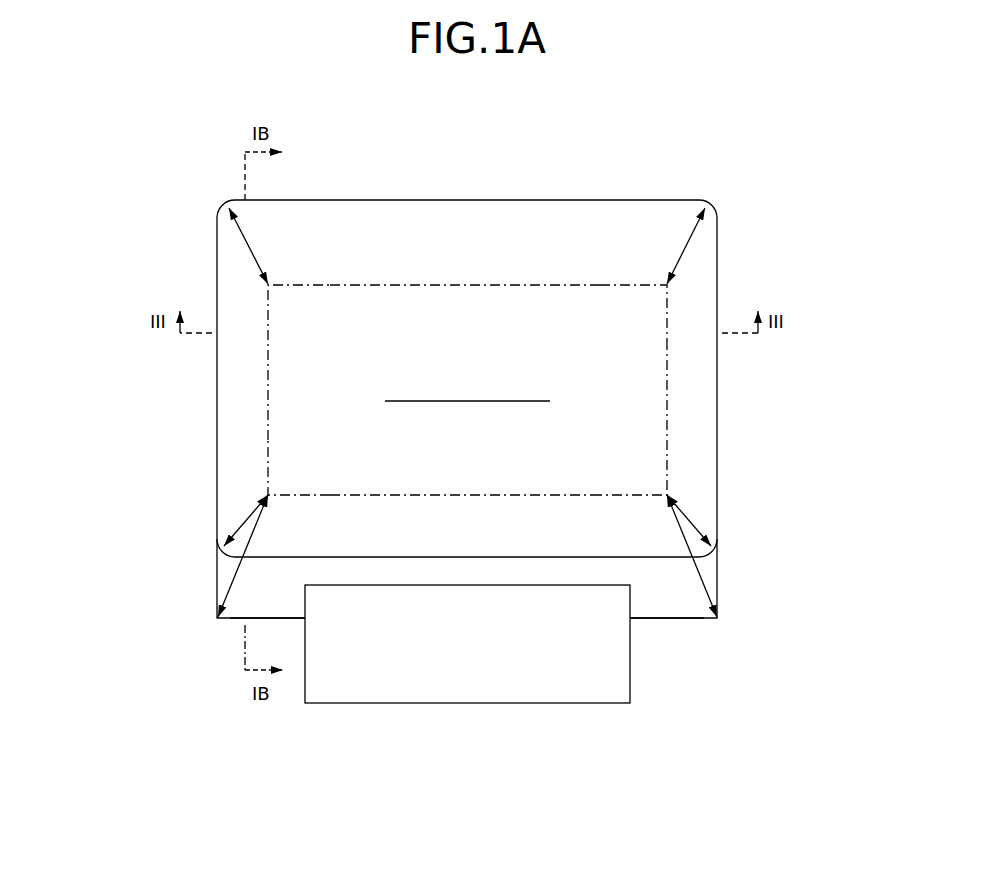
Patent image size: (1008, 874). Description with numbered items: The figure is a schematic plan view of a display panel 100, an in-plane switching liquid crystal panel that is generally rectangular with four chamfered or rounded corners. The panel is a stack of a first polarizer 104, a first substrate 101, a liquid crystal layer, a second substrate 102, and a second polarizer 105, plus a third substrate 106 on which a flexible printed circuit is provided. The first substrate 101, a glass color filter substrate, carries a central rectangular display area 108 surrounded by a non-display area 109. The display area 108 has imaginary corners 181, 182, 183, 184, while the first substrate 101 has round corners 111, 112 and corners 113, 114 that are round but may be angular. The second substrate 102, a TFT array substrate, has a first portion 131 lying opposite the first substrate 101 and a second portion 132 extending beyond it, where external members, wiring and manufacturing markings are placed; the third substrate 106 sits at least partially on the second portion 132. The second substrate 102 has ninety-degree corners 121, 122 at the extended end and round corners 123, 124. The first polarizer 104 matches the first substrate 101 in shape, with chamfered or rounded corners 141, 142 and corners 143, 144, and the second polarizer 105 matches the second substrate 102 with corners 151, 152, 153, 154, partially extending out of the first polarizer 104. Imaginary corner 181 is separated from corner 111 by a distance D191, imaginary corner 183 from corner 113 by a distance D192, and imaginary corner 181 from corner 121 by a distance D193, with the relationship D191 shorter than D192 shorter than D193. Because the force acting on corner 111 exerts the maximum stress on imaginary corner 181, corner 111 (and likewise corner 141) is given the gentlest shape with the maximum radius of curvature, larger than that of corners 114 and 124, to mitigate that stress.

The display panel 100 is at (366, 161).
The first substrate 101 is at (117, 378).
The second substrate 102 is at (440, 680).
The first polarizer 104 is at (117, 378).
The second polarizer 105 is at (237, 624).
The third substrate 106 is at (480, 676).
The display area 108 is at (500, 326).
The non-display area 109 is at (235, 372).
The corner 111 is at (766, 576).
The corner 112 is at (172, 576).
The corner 113 is at (142, 182).
The corner 114 is at (802, 182).
The corner 121 is at (770, 641).
The corner 122 is at (171, 641).
The corner 123 is at (142, 182).
The corner 124 is at (802, 182).
The first portion 131 is at (216, 435).
The second portion 132 is at (657, 604).
The corner 141 is at (717, 565).
The corner 142 is at (218, 565).
The corner 143 is at (142, 182).
The corner 144 is at (802, 182).
The corner 151 is at (717, 620).
The corner 152 is at (218, 620).
The corner 153 is at (227, 204).
The corner 154 is at (757, 172).
The imaginary corner 181 is at (667, 495).
The imaginary corner 182 is at (270, 495).
The imaginary corner 183 is at (270, 285).
The imaginary corner 184 is at (667, 285).
The distance D191 is at (244, 523).
The distance D192 is at (248, 246).
The distance D193 is at (249, 541).